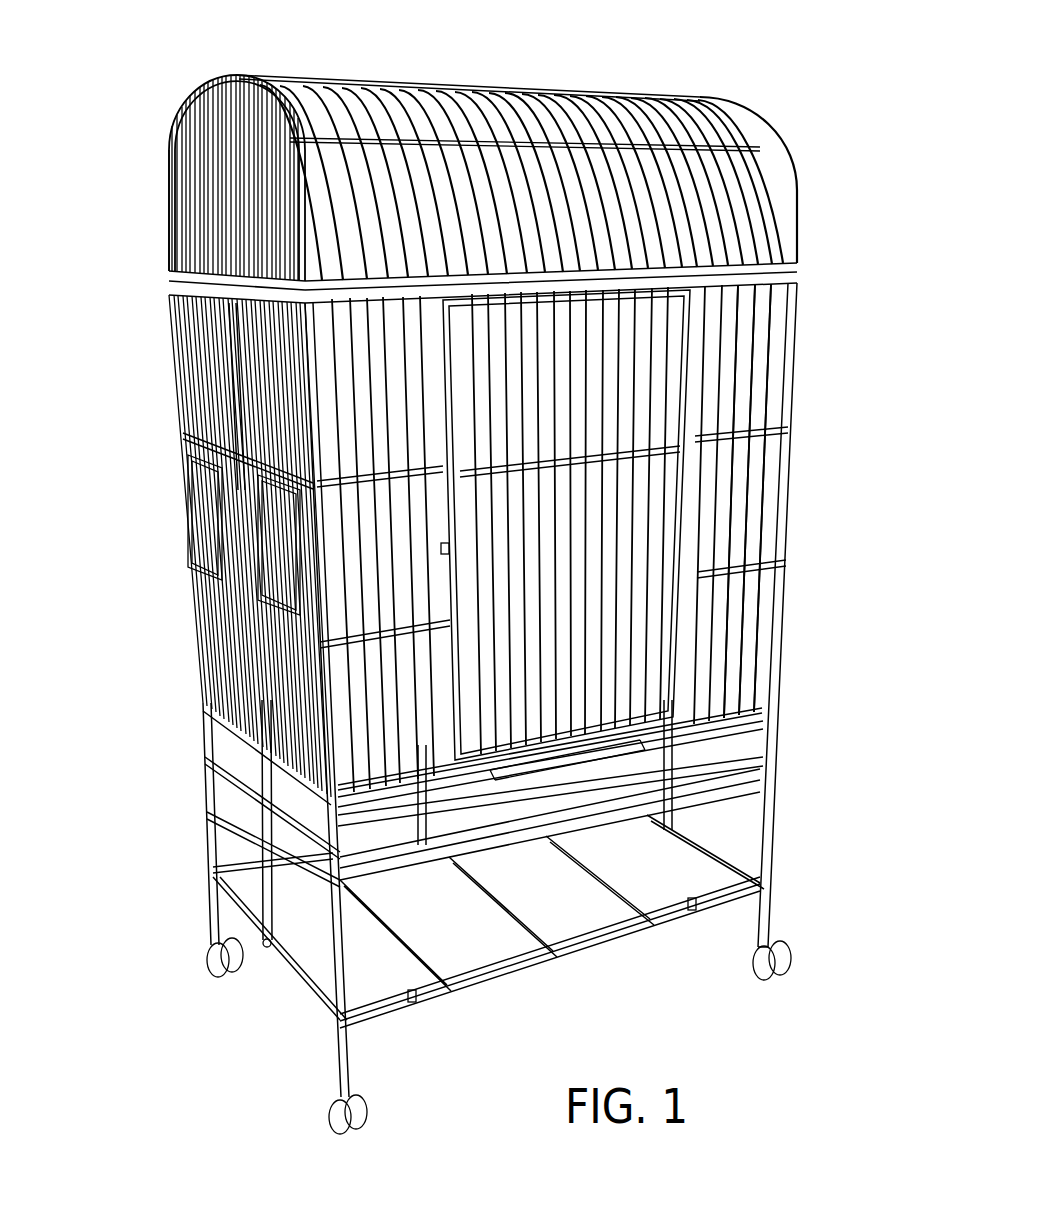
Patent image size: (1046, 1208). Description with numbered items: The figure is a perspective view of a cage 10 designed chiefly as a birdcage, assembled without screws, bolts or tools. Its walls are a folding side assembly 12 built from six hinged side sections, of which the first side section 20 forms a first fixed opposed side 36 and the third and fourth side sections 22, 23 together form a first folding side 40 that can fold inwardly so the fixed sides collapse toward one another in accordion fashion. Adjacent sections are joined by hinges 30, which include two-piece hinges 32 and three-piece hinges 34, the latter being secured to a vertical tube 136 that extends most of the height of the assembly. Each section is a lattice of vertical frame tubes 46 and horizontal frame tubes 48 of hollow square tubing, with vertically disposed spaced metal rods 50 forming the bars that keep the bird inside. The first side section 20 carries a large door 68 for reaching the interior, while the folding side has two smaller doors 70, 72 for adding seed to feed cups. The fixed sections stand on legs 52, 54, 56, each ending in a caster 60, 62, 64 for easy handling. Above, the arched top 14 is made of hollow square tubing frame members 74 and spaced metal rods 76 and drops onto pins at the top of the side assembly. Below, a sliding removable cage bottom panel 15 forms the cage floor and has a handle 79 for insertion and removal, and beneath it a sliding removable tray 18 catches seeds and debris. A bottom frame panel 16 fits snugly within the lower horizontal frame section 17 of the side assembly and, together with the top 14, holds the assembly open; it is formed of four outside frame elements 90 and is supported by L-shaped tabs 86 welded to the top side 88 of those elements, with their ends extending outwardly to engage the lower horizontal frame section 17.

The cage 10 is at (92, 736).
The folding side assembly 12 is at (750, 488).
The top 14 is at (758, 188).
The sliding removable cage bottom panel 15 is at (680, 712).
The bottom frame panel 16 is at (612, 905).
The lower horizontal frame section 17 is at (455, 990).
The sliding removable tray 18 is at (690, 785).
The first side section 20 is at (768, 392).
The third side section 22 is at (200, 335).
The fourth side section 23 is at (270, 383).
The hinges 30 is at (205, 740).
The two-piece hinges 32 is at (215, 757).
The three-piece hinges 34 is at (268, 942).
The first fixed opposed side 36 is at (765, 348).
The first folding side 40 is at (165, 367).
The vertical frame tubes 46 is at (783, 632).
The horizontal frame tubes 48 is at (770, 552).
The metal rods 50 is at (758, 460).
The leg 52 is at (335, 1058).
The leg 54 is at (785, 912).
The leg 56 is at (222, 893).
The caster 60 is at (335, 1120).
The caster 62 is at (790, 958).
The caster 64 is at (210, 960).
The large door 68 is at (623, 566).
The smaller door 70 is at (210, 497).
The smaller door 72 is at (285, 545).
The frame members 74 is at (165, 272).
The metal rods 76 is at (495, 108).
The handle 79 is at (660, 738).
The L-shaped tabs 86 is at (695, 905).
The top side 88 is at (600, 922).
The outside frame elements 90 is at (520, 960).
The vertical tube 136 is at (215, 845).